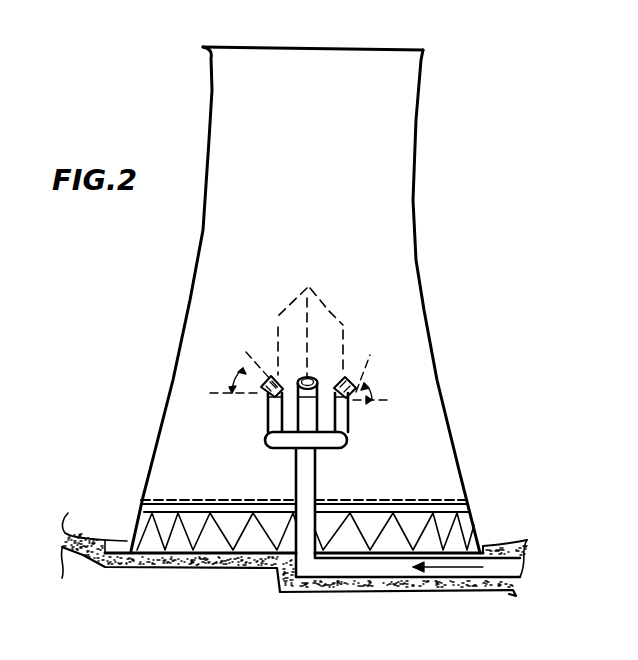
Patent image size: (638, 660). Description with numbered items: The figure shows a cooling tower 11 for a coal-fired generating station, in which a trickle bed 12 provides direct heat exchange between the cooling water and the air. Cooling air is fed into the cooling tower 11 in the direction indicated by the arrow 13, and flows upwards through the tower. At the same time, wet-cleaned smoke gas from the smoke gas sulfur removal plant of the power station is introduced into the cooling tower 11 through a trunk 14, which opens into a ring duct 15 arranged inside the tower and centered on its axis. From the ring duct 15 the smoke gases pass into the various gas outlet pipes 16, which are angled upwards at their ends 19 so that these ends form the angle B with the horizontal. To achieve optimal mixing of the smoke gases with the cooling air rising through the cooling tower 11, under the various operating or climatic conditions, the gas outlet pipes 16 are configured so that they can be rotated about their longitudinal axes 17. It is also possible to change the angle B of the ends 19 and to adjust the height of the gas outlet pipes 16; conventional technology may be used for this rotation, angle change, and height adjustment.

The cooling tower 11 is at (440, 388).
The trickle bed 12 is at (452, 522).
The arrow 13 is at (486, 527).
The trunk 14 is at (295, 470).
The ring duct 15 is at (348, 443).
The gas outlet pipes 16 is at (348, 417).
The longitudinal axes 17 is at (310, 320).
The ends 19 is at (265, 393).
The angle B is at (315, 388).